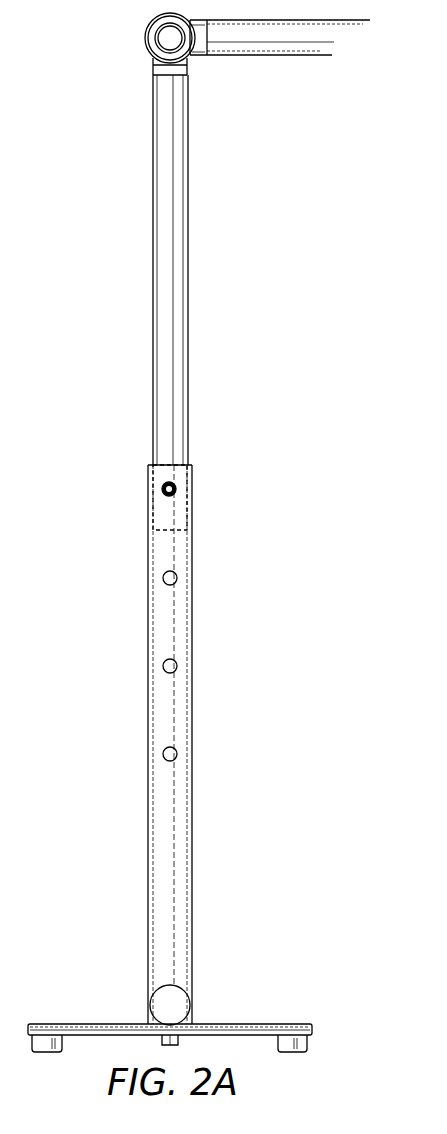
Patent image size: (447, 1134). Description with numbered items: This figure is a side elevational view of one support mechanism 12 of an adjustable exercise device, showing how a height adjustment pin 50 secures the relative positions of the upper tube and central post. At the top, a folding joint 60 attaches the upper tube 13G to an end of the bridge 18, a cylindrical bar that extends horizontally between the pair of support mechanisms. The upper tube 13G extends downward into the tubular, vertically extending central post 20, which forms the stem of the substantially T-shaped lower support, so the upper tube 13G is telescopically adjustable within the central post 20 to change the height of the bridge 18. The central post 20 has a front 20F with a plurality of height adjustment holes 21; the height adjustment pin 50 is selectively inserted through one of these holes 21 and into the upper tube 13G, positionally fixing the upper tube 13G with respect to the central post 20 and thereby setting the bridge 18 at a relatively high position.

The support mechanism 12 is at (288, 457).
The folding joint 60 is at (150, 28).
The bridge 18 is at (278, 57).
The upper tube 13G is at (188, 382).
The central post 20 is at (152, 610).
The front 20F is at (168, 855).
The height adjustment pin 50 is at (175, 485).
The height adjustment holes 21 is at (176, 661).